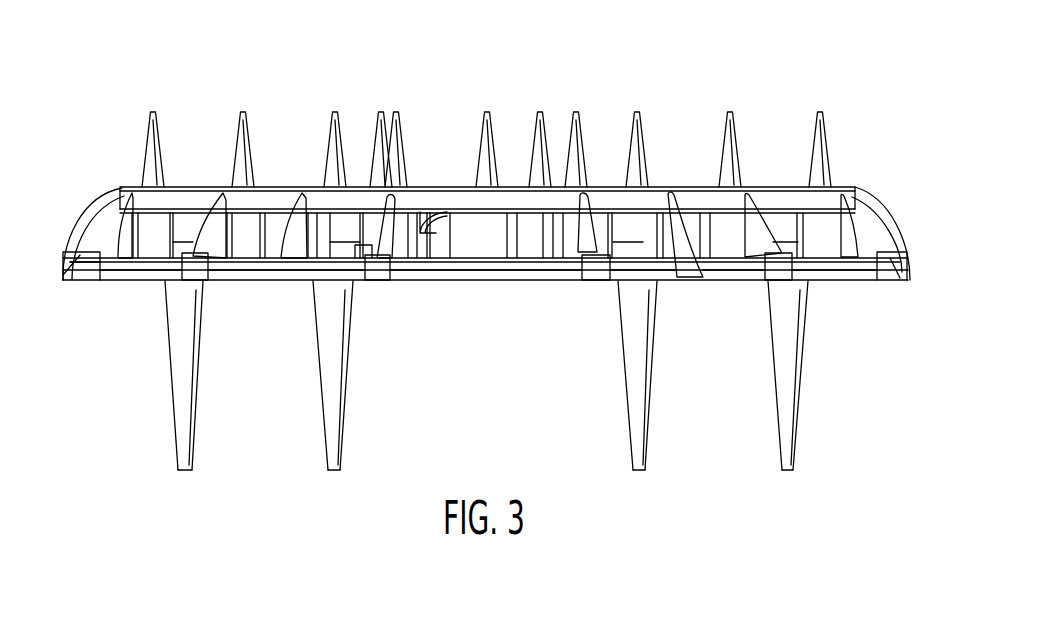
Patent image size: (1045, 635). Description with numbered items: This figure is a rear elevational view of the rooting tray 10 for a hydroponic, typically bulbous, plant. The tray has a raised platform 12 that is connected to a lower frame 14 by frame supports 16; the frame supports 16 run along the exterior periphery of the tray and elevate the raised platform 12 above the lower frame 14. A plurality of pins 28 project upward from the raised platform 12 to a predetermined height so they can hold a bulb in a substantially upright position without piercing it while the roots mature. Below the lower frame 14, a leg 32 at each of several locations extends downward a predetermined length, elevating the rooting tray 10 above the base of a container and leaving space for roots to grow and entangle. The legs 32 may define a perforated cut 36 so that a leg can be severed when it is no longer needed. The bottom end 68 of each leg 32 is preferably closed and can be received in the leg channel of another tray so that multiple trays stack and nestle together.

The rooting tray 10 is at (770, 73).
The raised platform 12 is at (117, 180).
The lower frame 14 is at (128, 280).
The frame support 16 is at (113, 233).
The pins 28 is at (818, 145).
The leg 32 is at (333, 381).
The perforated cut 36 is at (317, 283).
The bottom end of the leg 68 is at (340, 470).